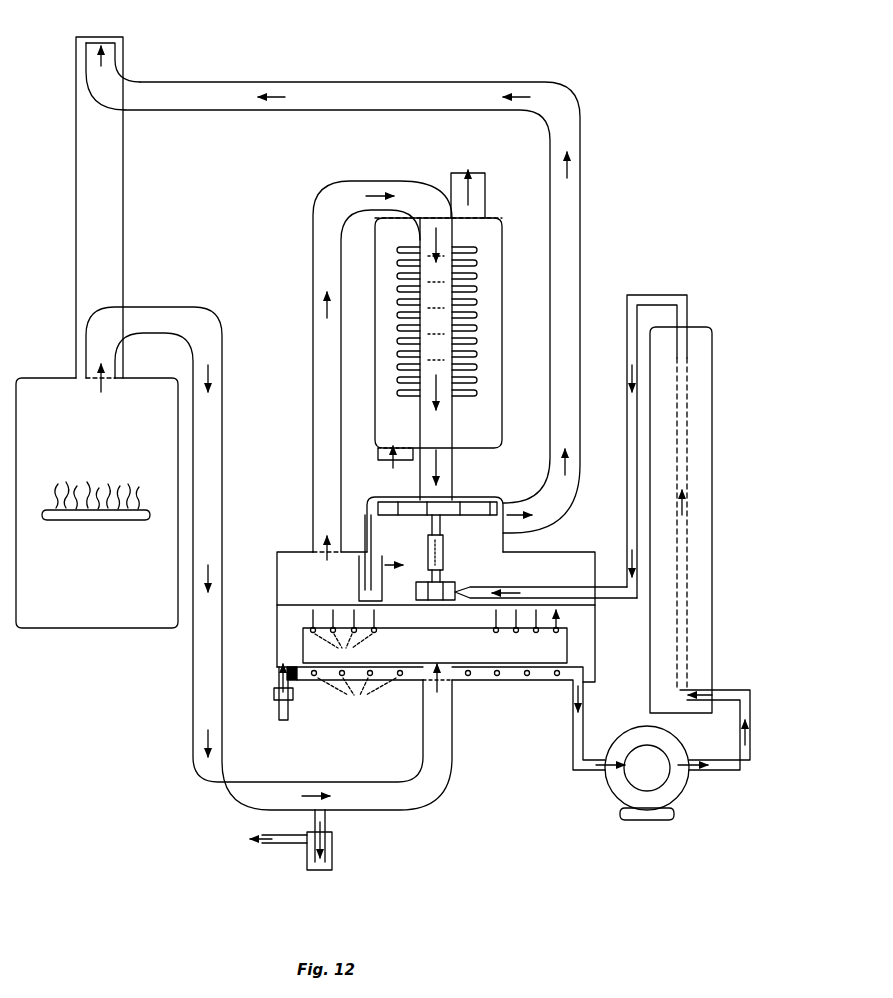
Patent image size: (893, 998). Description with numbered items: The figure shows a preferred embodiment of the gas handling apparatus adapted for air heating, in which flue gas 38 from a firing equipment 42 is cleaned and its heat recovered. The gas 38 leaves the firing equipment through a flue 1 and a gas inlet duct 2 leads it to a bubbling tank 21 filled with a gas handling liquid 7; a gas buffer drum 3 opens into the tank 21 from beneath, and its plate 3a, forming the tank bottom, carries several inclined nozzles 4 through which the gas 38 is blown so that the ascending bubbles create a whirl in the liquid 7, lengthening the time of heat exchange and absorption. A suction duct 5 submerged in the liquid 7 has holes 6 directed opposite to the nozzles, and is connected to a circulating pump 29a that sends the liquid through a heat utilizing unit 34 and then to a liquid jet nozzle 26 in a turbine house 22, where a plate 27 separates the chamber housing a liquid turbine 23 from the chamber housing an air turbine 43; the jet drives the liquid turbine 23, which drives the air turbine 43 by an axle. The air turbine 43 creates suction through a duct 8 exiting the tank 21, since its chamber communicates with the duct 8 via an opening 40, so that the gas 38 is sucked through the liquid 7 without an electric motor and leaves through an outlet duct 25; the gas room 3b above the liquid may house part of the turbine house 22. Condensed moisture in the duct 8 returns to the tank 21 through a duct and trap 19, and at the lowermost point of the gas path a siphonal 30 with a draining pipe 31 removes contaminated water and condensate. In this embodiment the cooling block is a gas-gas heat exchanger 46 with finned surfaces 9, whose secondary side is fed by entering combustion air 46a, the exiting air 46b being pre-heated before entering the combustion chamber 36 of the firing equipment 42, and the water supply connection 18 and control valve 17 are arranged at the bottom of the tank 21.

The flue gas duct 1 is at (76, 200).
The gas inlet duct 2 is at (175, 307).
The gas buffer drum 3 is at (303, 650).
The plate 3a is at (434, 618).
The gas room 3b is at (585, 560).
The nozzles 4 is at (435, 647).
The suction duct 5 is at (493, 684).
The holes 6 is at (436, 692).
The gas handling liquid 7 is at (414, 606).
The duct 8 is at (390, 182).
The heat exchanger fins 9 is at (467, 281).
The control valve 17 is at (274, 696).
The water supply connection 18 is at (279, 716).
The duct and trap 19 is at (359, 590).
The bubbling tank 21 is at (277, 578).
The turbine house 22 is at (478, 496).
The liquid turbine 23 is at (441, 583).
The outlet duct 25 is at (170, 82).
The liquid jet nozzle 26 is at (472, 588).
The plate 27 is at (448, 555).
The circulating pump 29a is at (679, 797).
The siphonal 30 is at (332, 850).
The draining pipe 31 is at (260, 845).
The heat utilizing unit 34 is at (690, 332).
The combustion chamber 36 is at (141, 497).
The gas 38 is at (112, 212).
The opening 40 is at (323, 560).
The firing equipment 42 is at (47, 378).
The air turbine 43 is at (378, 509).
The gas-gas heat exchanger 46 is at (500, 318).
The entering air 46a is at (393, 467).
The exiting air 46b is at (468, 179).